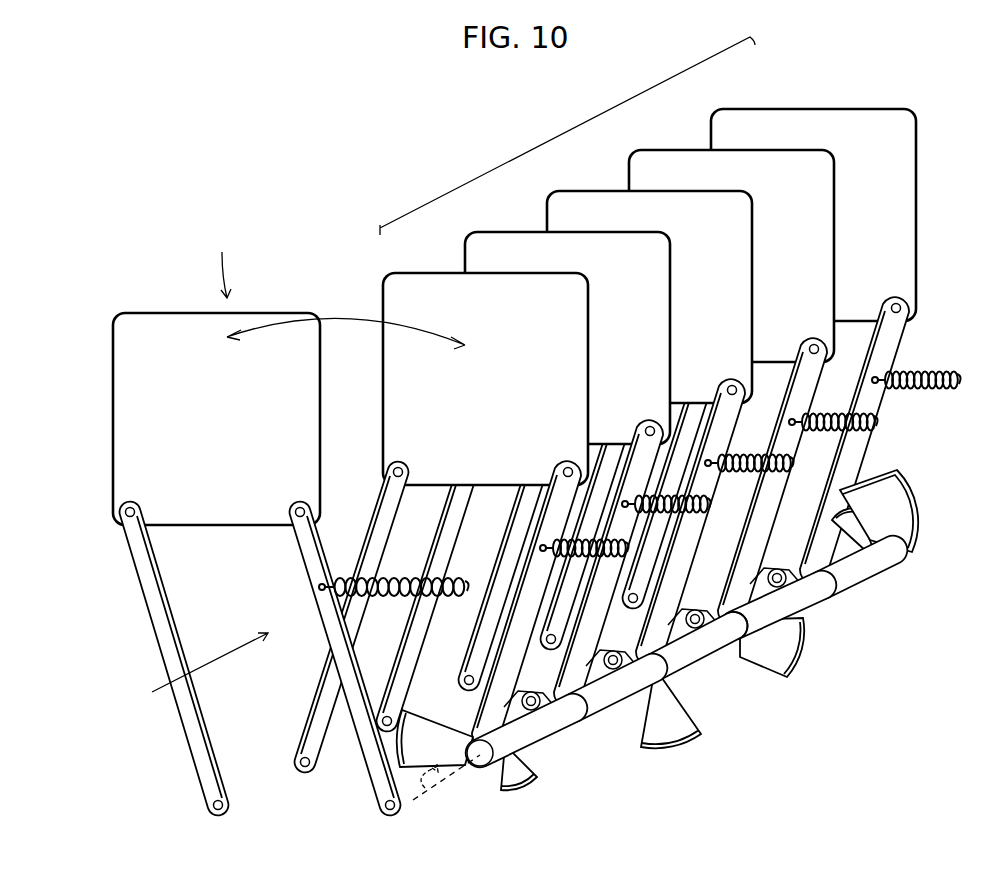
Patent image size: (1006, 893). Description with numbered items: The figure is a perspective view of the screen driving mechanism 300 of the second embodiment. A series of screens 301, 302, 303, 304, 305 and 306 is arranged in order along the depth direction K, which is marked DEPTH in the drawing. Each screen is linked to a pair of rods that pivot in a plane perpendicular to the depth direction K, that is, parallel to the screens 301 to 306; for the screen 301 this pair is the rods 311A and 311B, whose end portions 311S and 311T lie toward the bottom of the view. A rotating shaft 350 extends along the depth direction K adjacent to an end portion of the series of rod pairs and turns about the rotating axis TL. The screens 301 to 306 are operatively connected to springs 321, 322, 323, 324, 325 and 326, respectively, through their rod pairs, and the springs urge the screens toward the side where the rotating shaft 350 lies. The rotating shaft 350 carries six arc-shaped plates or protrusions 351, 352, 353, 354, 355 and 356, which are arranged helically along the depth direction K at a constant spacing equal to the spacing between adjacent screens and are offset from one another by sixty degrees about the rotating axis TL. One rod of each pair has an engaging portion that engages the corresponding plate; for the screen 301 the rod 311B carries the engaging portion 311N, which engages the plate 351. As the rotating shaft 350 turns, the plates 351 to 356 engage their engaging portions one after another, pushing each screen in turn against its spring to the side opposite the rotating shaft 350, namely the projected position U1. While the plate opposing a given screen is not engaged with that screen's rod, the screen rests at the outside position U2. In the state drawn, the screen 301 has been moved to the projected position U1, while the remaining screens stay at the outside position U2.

The screen driving mechanism 300 is at (266, 121).
The screen 301 is at (148, 312).
The screen 302 is at (418, 272).
The screen 303 is at (500, 231).
The screen 304 is at (582, 190).
The screen 305 is at (664, 149).
The screen 306 is at (747, 108).
The rod 311A is at (135, 548).
The rod 311B is at (306, 548).
The engaging portion 311N is at (377, 753).
The pivot shaft 311S is at (210, 804).
The pivot shaft 311T is at (382, 804).
The spring 321 is at (407, 577).
The spring 322 is at (593, 663).
The spring 323 is at (731, 625).
The spring 324 is at (790, 562).
The spring 325 is at (836, 411).
The spring 326 is at (938, 372).
The rotating shaft 350 is at (613, 690).
The arc-shaped plate 351 is at (450, 770).
The arc-shaped plate 352 is at (517, 786).
The arc-shaped plate 353 is at (661, 748).
The arc-shaped plate 354 is at (774, 676).
The arc-shaped plate 355 is at (878, 568).
The arc-shaped plate 356 is at (912, 501).
The projected position U1 is at (225, 258).
The outside position U2 is at (583, 125).
The depth direction K is at (227, 654).
The rotating axis TL is at (442, 800).
The depth direction DEPTH is at (272, 674).